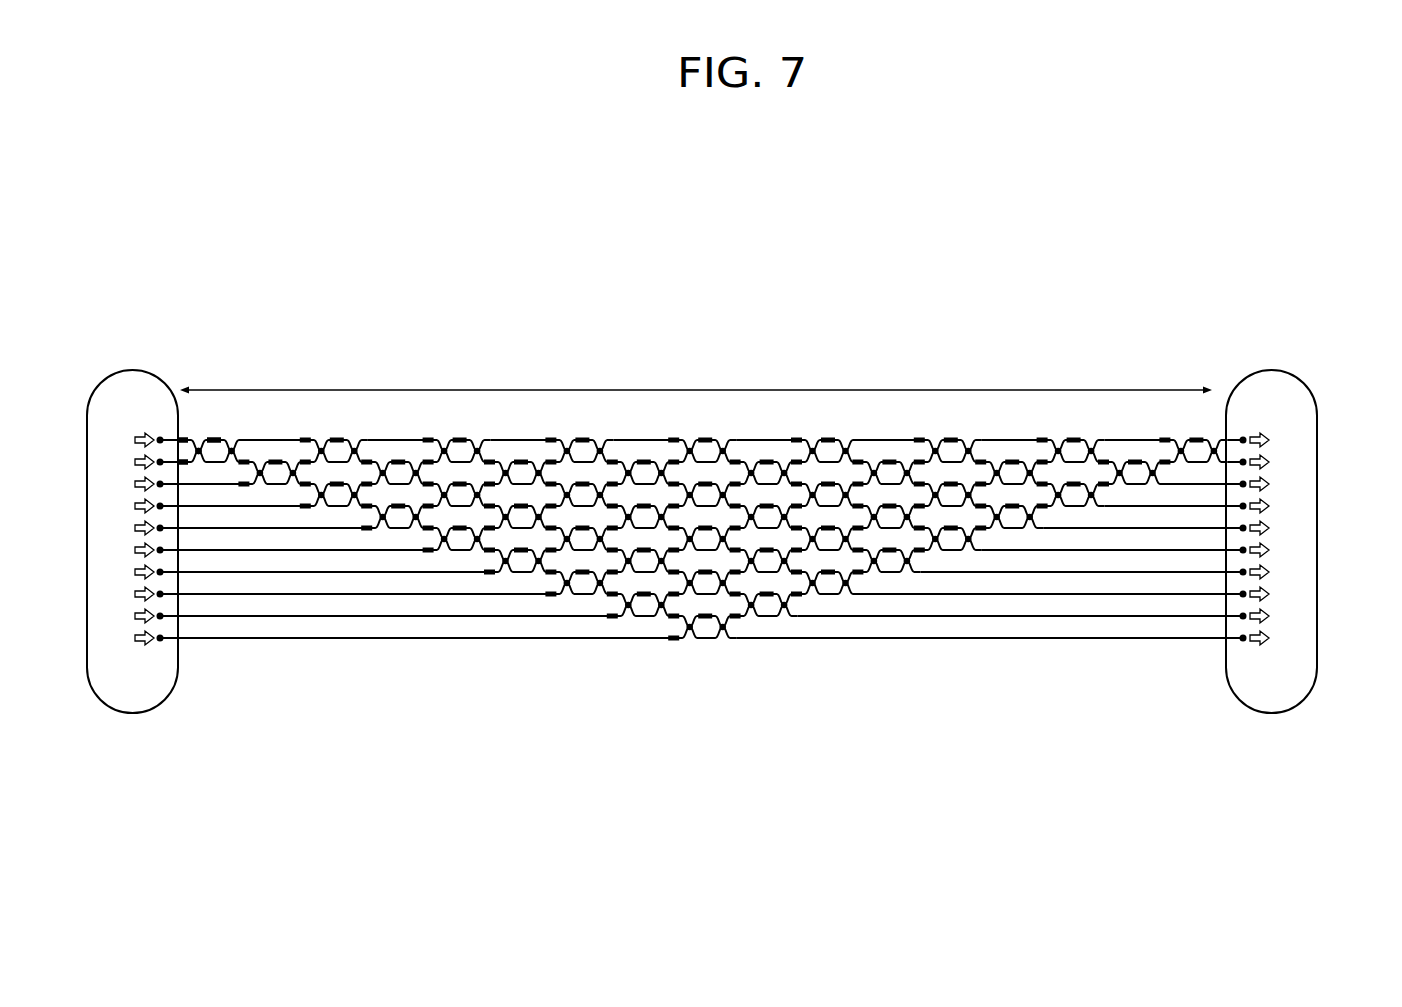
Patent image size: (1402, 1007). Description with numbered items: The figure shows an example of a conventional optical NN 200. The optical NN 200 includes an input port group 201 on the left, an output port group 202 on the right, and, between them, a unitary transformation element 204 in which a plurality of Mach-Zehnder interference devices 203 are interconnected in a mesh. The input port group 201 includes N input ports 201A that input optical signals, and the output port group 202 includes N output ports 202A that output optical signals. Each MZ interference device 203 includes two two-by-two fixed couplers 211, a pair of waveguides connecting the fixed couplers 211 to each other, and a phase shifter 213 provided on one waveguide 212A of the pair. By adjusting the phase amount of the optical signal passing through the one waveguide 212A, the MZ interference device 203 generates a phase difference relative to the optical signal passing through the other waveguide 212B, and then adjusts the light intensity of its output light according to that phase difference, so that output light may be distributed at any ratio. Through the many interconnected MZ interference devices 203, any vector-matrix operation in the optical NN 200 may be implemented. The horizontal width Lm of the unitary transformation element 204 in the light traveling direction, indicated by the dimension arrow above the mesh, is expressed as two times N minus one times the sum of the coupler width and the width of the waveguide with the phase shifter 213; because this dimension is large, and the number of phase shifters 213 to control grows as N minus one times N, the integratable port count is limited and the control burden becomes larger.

The optical NN 200 is at (918, 310).
The input port group 201 is at (128, 371).
The input port 201A is at (134, 637).
The output port group 202 is at (1268, 371).
The output port 202A is at (1330, 640).
The Mach-Zehnder interference device 203 is at (702, 510).
The unitary transformation element 204 is at (947, 428).
The 2×2 fixed coupler 211 is at (274, 393).
The one waveguide 212A is at (205, 438).
The other waveguide 212B is at (216, 464).
The phase shifter 213 is at (216, 438).